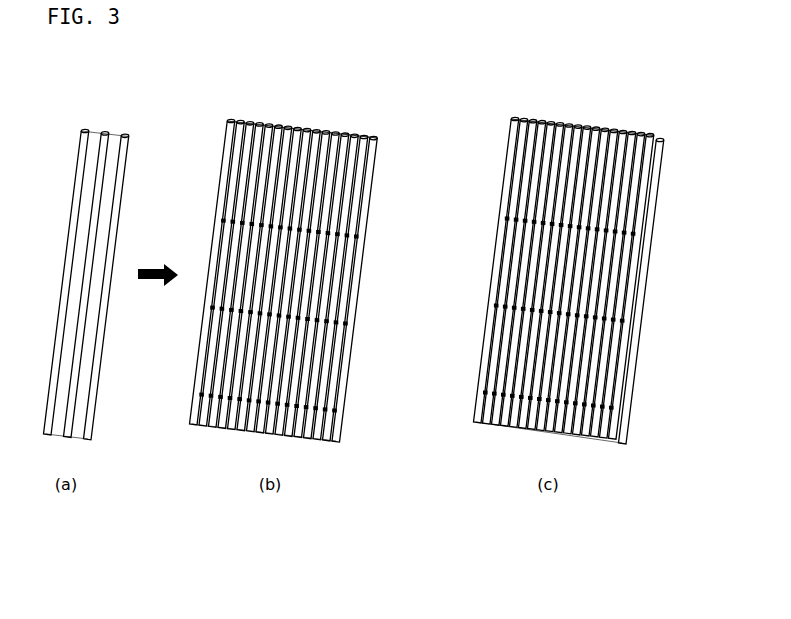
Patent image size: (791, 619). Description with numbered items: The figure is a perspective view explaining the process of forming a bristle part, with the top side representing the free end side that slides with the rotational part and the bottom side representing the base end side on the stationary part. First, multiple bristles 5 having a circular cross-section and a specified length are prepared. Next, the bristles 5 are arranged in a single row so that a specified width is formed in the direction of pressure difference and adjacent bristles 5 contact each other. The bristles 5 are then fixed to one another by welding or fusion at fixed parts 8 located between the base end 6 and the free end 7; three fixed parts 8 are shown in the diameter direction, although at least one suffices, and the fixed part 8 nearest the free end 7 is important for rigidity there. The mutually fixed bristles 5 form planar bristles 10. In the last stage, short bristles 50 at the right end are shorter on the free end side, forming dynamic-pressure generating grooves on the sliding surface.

The bristles 5 is at (118, 144).
The base end 6 is at (68, 439).
The free end 7 is at (110, 131).
The fixed parts 8 is at (221, 220).
The planar bristles 10 is at (308, 121).
The short bristles 50 is at (657, 151).